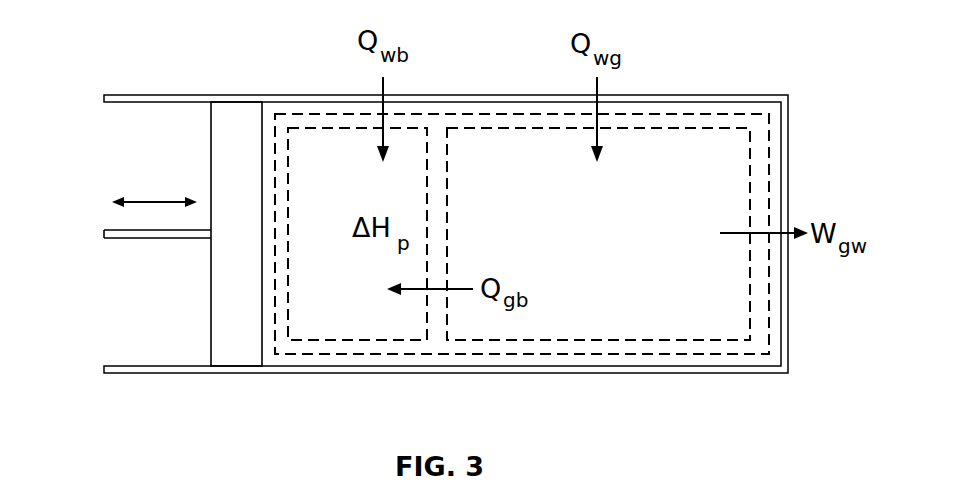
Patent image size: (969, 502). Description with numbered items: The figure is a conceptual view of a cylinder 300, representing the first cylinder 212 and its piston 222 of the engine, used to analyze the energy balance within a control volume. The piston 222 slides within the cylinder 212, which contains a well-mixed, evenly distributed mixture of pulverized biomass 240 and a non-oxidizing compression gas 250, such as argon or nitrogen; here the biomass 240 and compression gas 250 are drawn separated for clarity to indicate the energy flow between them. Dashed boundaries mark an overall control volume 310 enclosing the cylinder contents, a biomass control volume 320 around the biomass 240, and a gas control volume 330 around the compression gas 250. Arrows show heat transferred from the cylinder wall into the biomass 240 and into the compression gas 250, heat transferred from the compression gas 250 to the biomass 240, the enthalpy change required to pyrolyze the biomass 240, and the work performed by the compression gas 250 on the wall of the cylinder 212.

The cylinder 300 is at (112, 38).
The first cylinder 212 is at (548, 373).
The piston 222 is at (210, 289).
The pulverized biomass 240 is at (322, 137).
The compression gas 250 is at (680, 138).
The system control volume 310 is at (768, 150).
The biomass control volume 320 is at (355, 342).
The gas control volume 330 is at (672, 342).